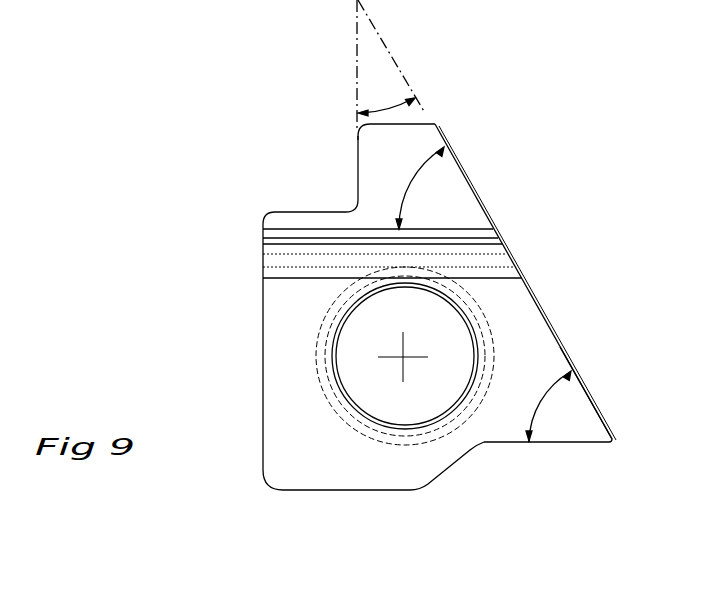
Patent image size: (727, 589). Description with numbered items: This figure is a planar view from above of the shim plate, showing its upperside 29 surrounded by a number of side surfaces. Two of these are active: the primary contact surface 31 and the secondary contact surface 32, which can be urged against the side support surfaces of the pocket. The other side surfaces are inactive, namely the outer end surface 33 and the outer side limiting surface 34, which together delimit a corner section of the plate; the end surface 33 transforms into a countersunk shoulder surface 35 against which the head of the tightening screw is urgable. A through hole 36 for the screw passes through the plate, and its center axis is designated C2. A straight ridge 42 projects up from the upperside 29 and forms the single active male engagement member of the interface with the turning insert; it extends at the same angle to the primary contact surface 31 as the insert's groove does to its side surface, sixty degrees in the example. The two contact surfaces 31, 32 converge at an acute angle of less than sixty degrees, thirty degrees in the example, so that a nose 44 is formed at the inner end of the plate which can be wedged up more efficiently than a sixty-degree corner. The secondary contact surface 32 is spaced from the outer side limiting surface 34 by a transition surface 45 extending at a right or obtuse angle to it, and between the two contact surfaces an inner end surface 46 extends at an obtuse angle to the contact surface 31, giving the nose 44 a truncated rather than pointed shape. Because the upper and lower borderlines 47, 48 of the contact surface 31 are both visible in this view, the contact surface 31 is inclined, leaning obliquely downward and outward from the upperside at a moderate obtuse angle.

The upperside 29 is at (337, 461).
The primary contact surface 31 is at (542, 308).
The secondary contact surface 32 is at (357, 183).
The outer end surface 33 is at (310, 493).
The outer side limiting surface 34 is at (262, 372).
The countersunk shoulder surface 35 is at (510, 443).
The through hole 36 is at (376, 336).
The ridge 42 is at (461, 228).
The nose 44 is at (376, 143).
The transition surface 45 is at (294, 212).
The inner end surface 46 is at (420, 124).
The upper borderline of the contact surface 47 is at (588, 390).
The lower borderline of the contact surface 48 is at (508, 246).
The center axis of the hole in the shim plate C2 is at (403, 358).